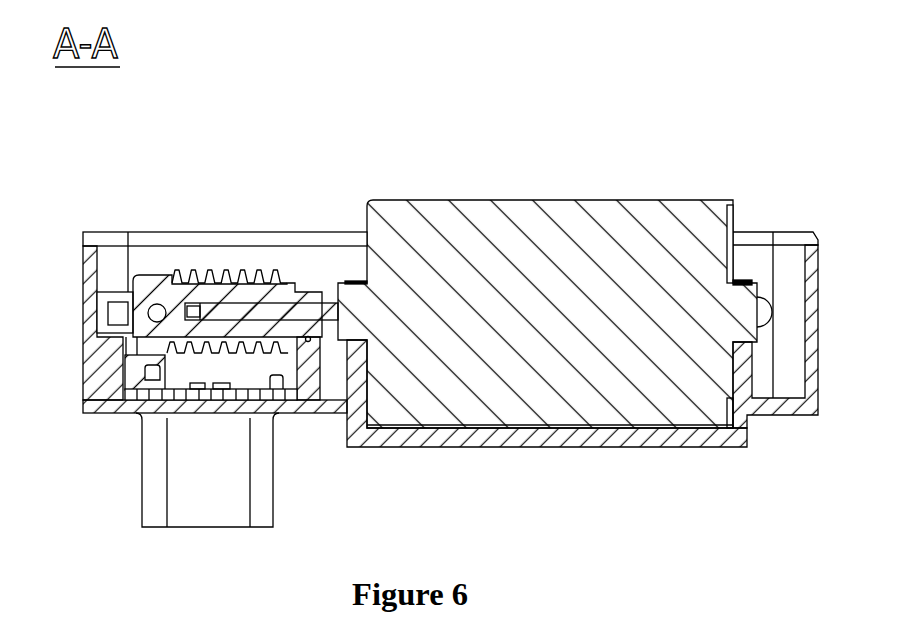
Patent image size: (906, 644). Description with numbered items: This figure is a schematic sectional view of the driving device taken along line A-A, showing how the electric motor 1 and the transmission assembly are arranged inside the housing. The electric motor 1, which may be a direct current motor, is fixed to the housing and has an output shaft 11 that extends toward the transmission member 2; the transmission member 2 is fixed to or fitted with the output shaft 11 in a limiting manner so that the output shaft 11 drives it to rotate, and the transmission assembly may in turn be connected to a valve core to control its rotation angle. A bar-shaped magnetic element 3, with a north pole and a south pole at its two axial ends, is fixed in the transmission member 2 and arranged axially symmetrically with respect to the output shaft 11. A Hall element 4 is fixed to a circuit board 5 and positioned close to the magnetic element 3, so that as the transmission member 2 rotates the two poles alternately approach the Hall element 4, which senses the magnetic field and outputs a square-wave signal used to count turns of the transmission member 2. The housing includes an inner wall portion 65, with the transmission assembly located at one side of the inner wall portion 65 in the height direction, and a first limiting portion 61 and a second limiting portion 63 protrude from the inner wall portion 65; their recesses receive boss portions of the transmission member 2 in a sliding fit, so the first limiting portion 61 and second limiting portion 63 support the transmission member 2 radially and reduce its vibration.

The electric motor 1 is at (562, 313).
The output shaft 11 is at (333, 303).
The transmission member 2 is at (278, 282).
The magnetic element 3 is at (157, 304).
The Hall element 4 is at (150, 378).
The circuit board 5 is at (277, 388).
The first limiting portion 61 is at (108, 346).
The second limiting portion 63 is at (314, 372).
The inner wall portion 65 is at (205, 405).